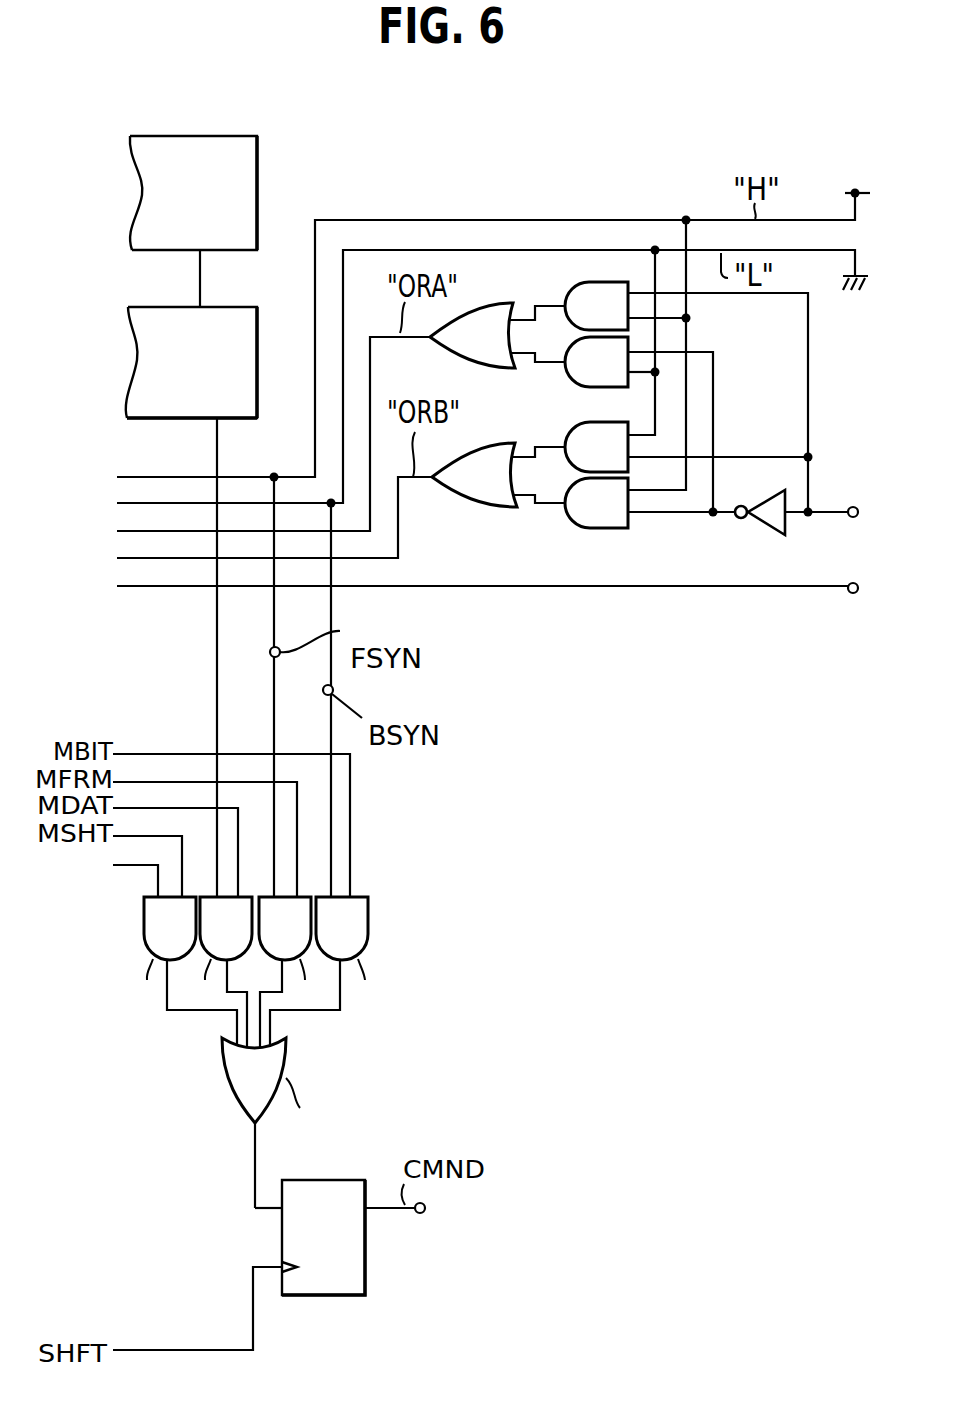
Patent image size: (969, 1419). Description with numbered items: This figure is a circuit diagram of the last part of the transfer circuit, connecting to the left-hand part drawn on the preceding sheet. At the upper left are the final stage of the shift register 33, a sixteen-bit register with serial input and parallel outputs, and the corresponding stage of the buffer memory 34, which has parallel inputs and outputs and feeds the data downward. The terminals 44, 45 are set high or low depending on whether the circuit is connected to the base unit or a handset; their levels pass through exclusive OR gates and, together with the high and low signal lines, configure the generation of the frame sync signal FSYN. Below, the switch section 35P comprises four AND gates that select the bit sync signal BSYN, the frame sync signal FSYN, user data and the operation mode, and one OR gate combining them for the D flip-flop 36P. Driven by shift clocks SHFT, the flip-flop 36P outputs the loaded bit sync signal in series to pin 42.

The shift register 33 is at (237, 251).
The buffer memory 34 is at (233, 419).
The terminal 44 is at (853, 518).
The terminal 45 is at (853, 594).
The switch section 35P is at (388, 1030).
The D flip-flop 36P is at (345, 1296).
The pin 42 is at (423, 1213).